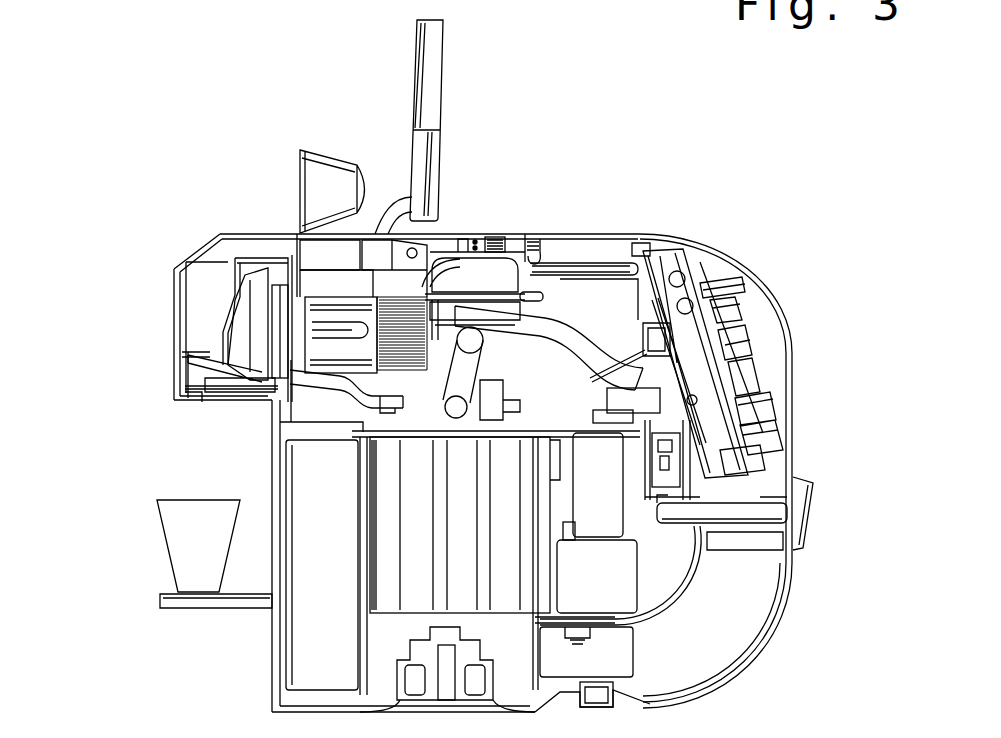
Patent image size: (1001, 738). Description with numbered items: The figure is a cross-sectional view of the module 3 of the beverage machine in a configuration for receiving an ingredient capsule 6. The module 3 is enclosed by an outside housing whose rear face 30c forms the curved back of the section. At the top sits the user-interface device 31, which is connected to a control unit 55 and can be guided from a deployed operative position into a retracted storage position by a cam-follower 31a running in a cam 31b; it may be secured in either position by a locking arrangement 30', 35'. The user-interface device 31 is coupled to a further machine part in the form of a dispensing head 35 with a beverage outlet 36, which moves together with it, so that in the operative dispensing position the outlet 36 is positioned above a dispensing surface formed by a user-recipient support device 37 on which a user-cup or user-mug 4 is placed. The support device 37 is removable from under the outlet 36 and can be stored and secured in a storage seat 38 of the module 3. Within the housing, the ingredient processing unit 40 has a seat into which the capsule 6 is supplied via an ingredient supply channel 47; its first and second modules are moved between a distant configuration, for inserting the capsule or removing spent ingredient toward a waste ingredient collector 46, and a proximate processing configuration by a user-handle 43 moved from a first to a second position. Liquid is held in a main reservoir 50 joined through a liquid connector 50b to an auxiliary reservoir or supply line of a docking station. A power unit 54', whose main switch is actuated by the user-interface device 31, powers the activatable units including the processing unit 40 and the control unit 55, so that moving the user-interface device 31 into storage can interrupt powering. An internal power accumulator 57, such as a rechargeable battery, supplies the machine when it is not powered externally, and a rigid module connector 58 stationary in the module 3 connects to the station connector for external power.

The module 3 is at (128, 94).
The user-cup or user-mug 4 is at (182, 530).
The capsule 6 is at (325, 178).
The rear face 30c is at (780, 317).
The locking arrangement 30' is at (557, 357).
The user-interface device 31 is at (466, 230).
The cam-follower 31a is at (540, 240).
The cam 31b is at (606, 260).
The dispensing head 35 is at (167, 328).
The locking arrangement 35' is at (578, 510).
The beverage outlet 36 is at (190, 398).
The user-recipient support device 37 is at (170, 603).
The storage seat 38 is at (748, 516).
The ingredient processing unit 40 is at (220, 278).
The user-handle 43 is at (435, 103).
The waste ingredient collector 46 is at (290, 498).
The ingredient supply channel 47 is at (317, 263).
The main reservoir 50 is at (710, 647).
The liquid connector 50b is at (597, 695).
The power unit 54' is at (705, 509).
The control unit 55 is at (748, 398).
The internal power accumulator 57 is at (408, 585).
The module connector 58 is at (443, 688).